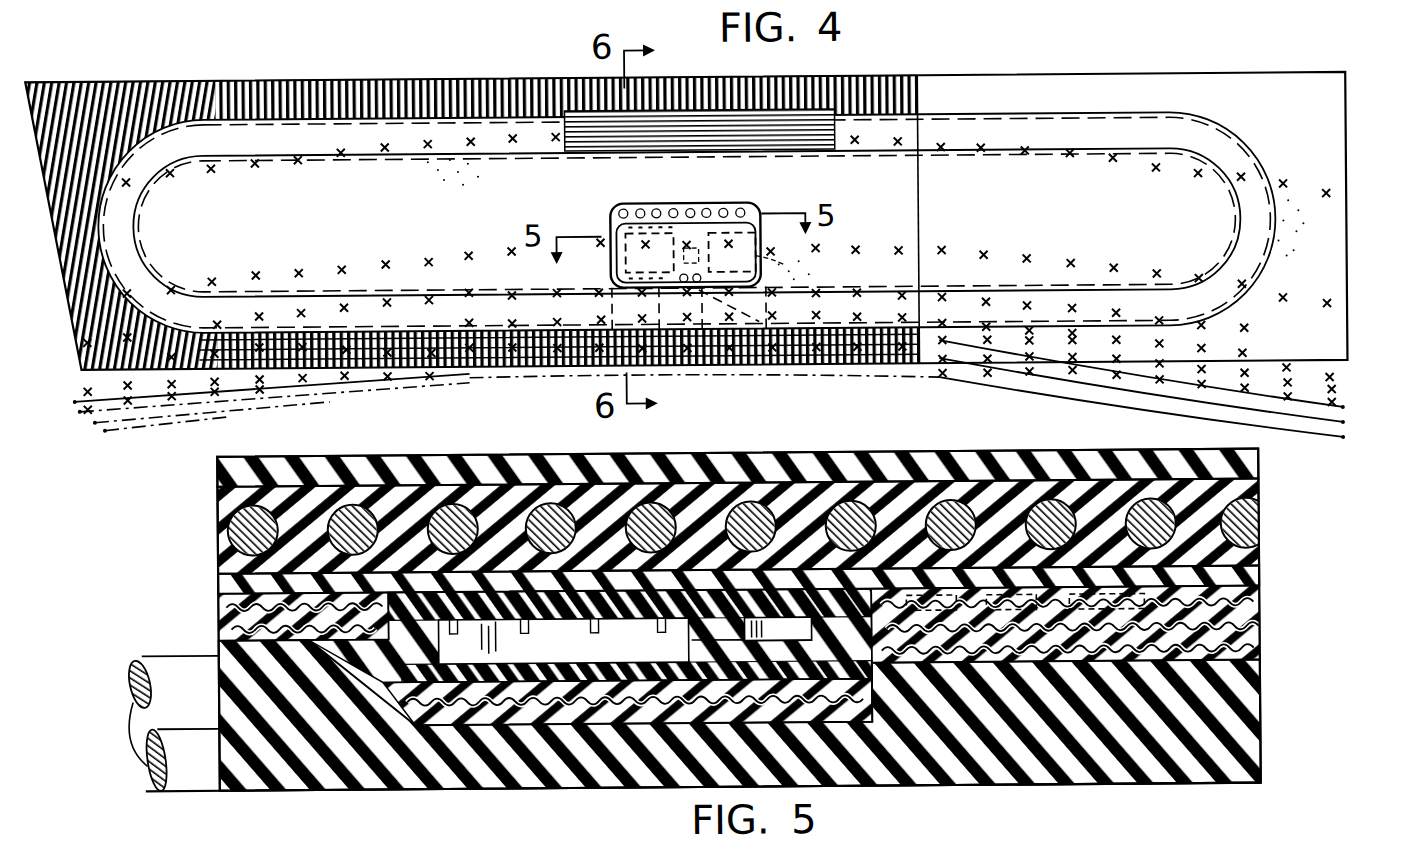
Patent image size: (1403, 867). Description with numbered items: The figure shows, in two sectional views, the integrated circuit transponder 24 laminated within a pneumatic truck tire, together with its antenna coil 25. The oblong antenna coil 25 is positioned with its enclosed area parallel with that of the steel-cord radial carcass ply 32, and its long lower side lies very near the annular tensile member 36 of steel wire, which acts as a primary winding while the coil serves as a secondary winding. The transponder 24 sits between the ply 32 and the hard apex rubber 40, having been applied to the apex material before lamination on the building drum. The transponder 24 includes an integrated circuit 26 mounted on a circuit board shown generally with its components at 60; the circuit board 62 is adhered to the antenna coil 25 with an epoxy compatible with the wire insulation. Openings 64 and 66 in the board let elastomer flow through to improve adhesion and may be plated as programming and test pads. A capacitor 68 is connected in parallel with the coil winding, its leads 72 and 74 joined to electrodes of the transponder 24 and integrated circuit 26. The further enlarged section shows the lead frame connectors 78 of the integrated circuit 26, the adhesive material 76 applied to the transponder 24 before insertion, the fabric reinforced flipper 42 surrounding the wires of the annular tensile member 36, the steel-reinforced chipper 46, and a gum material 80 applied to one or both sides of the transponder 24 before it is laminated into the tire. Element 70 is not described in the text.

In FIG. 4, the integrated circuit transponder 24 is at (572, 162).
In FIG. 4, the antenna coil 25 is at (790, 128).
In FIG. 4, the integrated circuit 26 is at (612, 268).
In FIG. 5, the integrated circuit 26 is at (569, 648).
In FIG. 4, the steel-cord radial carcass ply 32 is at (372, 82).
In FIG. 5, the steel-cord radial carcass ply 32 is at (992, 500).
In FIG. 4, the annular tensile member 36 is at (104, 417).
In FIG. 5, the annular tensile member 36 is at (177, 733).
In FIG. 5, the apex 40 is at (1240, 715).
In FIG. 4, the fabric reinforced flipper 42 is at (1235, 82).
In FIG. 5, the fabric reinforced flipper 42 is at (1258, 617).
In FIG. 5, the steel-reinforced chipper 46 is at (932, 458).
In FIG. 4, the circuit board components 60 is at (705, 221).
In FIG. 4, the circuit board 62 is at (708, 223).
In FIG. 5, the circuit board 62 is at (597, 590).
In FIG. 4, the opening 64 is at (616, 204).
In FIG. 4, the opening 66 is at (765, 262).
In FIG. 5, the opening 66 is at (883, 615).
In FIG. 4, the capacitor 68 is at (702, 205).
In FIG. 5, the capacitor 68 is at (799, 640).
In FIG. 4, the circuit substrate 70 is at (753, 210).
In FIG. 5, the circuit substrate 70 is at (787, 616).
In FIG. 4, the lead 72 is at (677, 372).
In FIG. 4, the lead 74 is at (760, 372).
In FIG. 4, the adhesive material 76 is at (684, 155).
In FIG. 5, the adhesive material 76 is at (693, 590).
In FIG. 5, the lead frame connectors 78 is at (598, 631).
In FIG. 5, the gum material 80 is at (1243, 573).